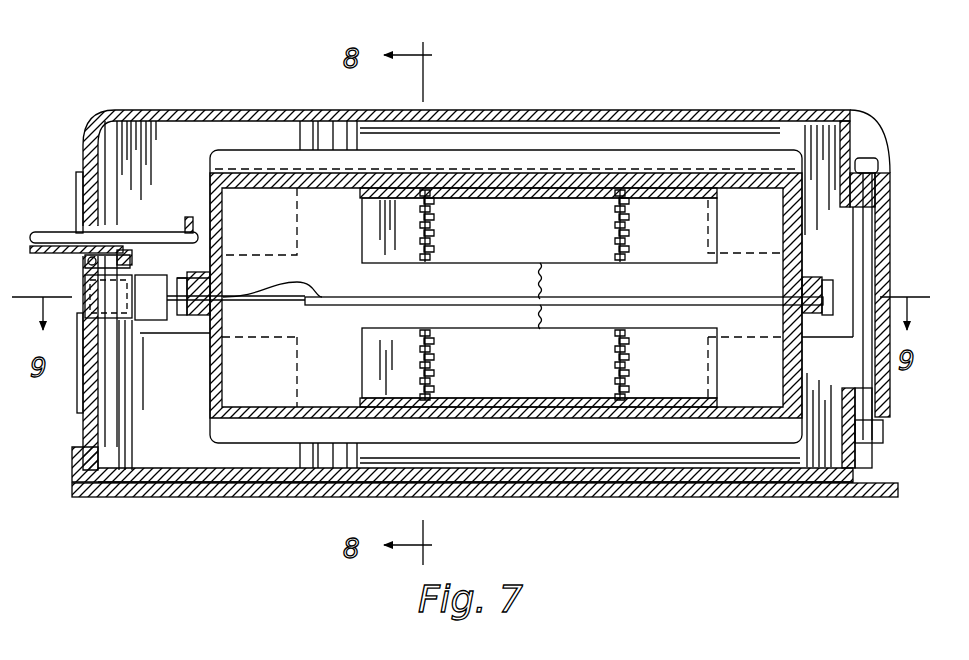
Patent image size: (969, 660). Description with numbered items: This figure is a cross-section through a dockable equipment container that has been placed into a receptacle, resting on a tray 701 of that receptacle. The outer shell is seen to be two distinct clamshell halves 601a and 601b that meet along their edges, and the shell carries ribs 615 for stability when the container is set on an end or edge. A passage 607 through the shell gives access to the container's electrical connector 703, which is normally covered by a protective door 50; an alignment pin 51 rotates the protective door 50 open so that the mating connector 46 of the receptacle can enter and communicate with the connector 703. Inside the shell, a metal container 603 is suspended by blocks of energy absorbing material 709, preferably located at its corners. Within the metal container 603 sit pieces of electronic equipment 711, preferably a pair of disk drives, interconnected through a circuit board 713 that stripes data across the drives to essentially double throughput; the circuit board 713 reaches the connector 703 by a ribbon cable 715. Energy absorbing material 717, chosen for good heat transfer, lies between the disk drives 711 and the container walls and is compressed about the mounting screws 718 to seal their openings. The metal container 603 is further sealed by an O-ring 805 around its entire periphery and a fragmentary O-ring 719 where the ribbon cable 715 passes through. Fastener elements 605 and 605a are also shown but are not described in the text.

The mating connector 46 is at (80, 290).
The protective door 50 is at (62, 235).
The alignment pin 51 is at (70, 230).
The clamshell half 601a is at (776, 110).
The clamshell half 601b is at (756, 497).
The metal container 603 is at (590, 162).
The bolt 605 is at (874, 158).
The nut 605a is at (872, 445).
The passage 607 is at (80, 358).
The ribs 615 is at (76, 178).
The tray 701 is at (296, 497).
The connector 703 is at (160, 330).
The blocks of energy absorbing material 709 is at (184, 140).
The electronic equipment 711 is at (557, 250).
The circuit board 713 is at (350, 297).
The ribbon cable 715 is at (272, 290).
The energy absorbing material 717 is at (540, 180).
The mounting screws 718 is at (440, 188).
The fragmentary O-ring 719 is at (195, 275).
The O-ring 805 is at (215, 300).